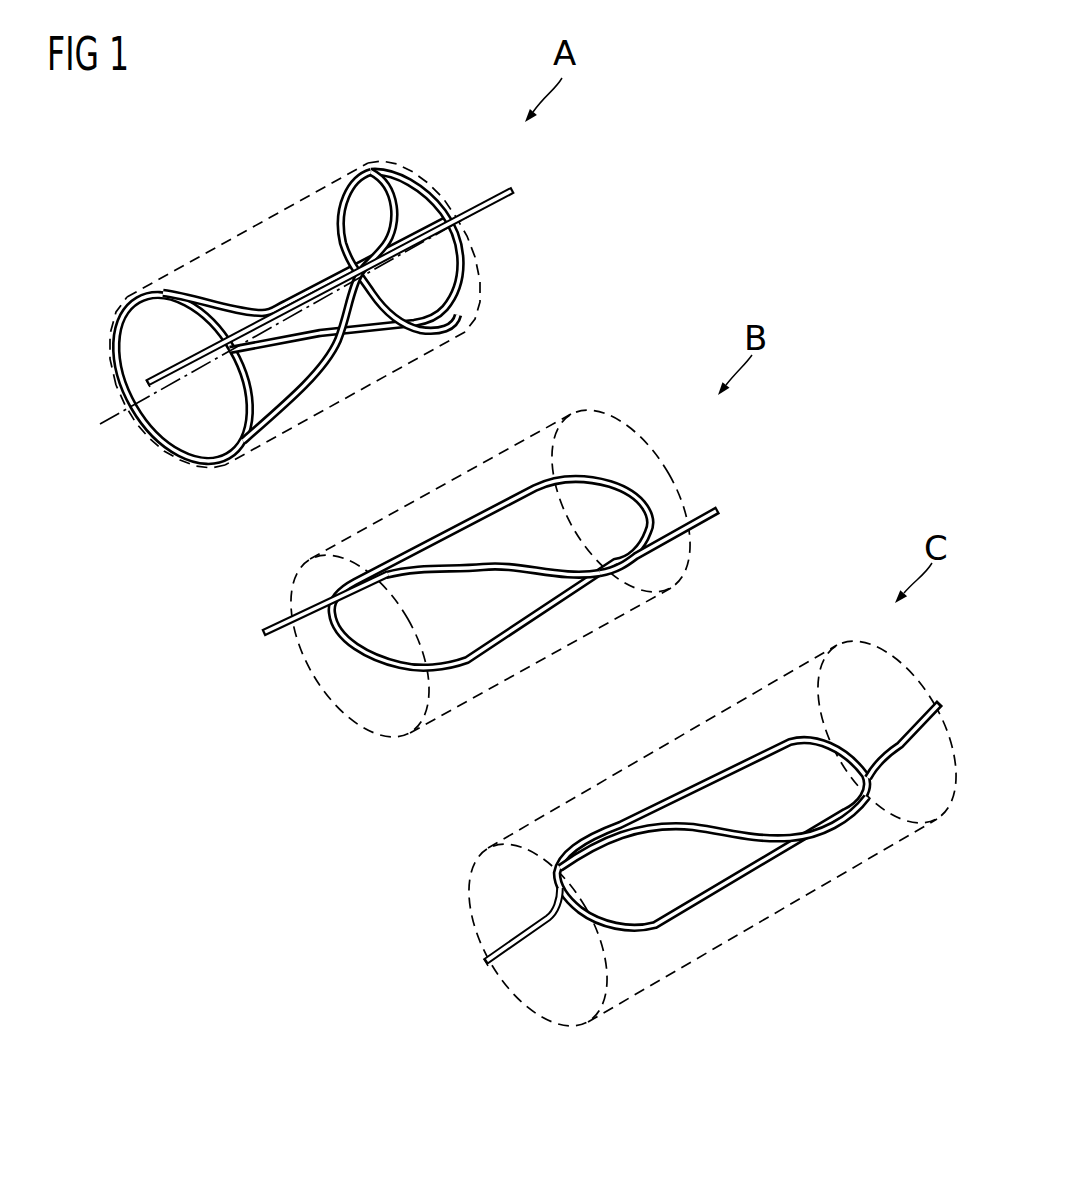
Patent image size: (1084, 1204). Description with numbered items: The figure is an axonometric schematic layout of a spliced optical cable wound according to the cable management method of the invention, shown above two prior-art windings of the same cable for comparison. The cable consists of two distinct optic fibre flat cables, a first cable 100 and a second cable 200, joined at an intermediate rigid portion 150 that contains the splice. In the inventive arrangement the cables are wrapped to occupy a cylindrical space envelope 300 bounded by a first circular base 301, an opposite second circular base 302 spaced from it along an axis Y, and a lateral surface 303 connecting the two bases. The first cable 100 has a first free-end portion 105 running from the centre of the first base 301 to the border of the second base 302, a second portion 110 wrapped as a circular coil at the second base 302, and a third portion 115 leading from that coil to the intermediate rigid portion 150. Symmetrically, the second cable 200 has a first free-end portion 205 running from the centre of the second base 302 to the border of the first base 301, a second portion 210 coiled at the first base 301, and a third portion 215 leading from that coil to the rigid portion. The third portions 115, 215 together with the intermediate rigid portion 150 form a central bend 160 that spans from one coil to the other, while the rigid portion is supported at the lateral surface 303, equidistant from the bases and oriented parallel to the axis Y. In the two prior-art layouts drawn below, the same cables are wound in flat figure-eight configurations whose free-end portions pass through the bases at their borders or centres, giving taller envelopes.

The first cable 100 is at (351, 591).
The first free-end portion 105 is at (153, 373).
The second portion 110 is at (428, 184).
The third portion 115 is at (384, 170).
The intermediate rigid portion 150 is at (316, 280).
The central bend 160 is at (263, 303).
The second cable 200 is at (494, 517).
The first free-end portion 205 is at (628, 582).
The second portion 210 is at (262, 421).
The third portion 215 is at (205, 282).
The cylindrical space envelope 300 is at (320, 181).
The first circular base 301 is at (177, 461).
The second circular base 302 is at (482, 283).
The lateral surface 303 is at (147, 282).
The axis Y is at (515, 200).